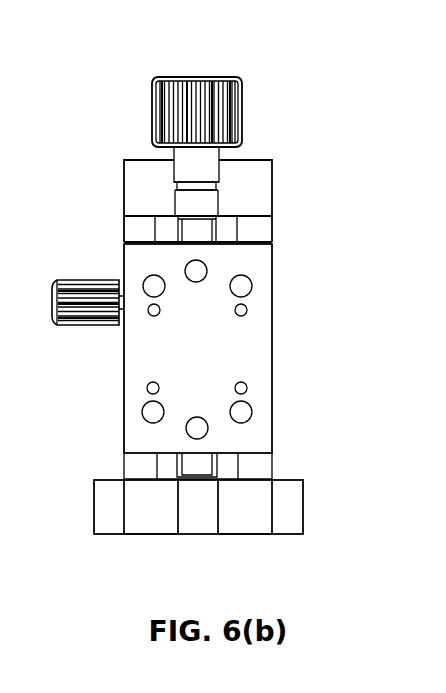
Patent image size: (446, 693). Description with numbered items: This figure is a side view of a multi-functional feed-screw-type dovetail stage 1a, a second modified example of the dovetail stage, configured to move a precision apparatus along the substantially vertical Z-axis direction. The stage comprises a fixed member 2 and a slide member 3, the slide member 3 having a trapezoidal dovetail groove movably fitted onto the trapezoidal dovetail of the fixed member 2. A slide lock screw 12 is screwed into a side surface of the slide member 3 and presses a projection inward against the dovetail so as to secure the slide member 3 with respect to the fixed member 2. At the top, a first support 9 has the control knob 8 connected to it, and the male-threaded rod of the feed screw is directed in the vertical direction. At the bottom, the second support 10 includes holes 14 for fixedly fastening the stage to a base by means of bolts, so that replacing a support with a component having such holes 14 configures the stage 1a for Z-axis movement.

The multi-functional feed-screw-type dovetail stage 1a is at (268, 65).
The control knob 8 is at (160, 112).
The fixed member 2 is at (136, 186).
The first support 9 is at (262, 233).
The slide member 3 is at (262, 340).
The slide lock screw 12 is at (72, 318).
The second support 10 is at (293, 523).
The holes for fixedly fastening to the base 14 is at (153, 525).